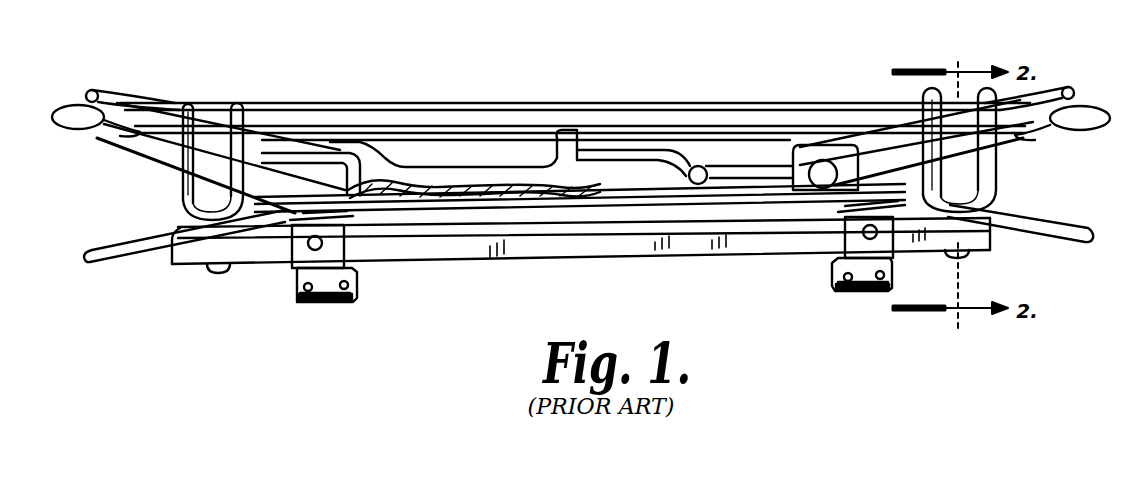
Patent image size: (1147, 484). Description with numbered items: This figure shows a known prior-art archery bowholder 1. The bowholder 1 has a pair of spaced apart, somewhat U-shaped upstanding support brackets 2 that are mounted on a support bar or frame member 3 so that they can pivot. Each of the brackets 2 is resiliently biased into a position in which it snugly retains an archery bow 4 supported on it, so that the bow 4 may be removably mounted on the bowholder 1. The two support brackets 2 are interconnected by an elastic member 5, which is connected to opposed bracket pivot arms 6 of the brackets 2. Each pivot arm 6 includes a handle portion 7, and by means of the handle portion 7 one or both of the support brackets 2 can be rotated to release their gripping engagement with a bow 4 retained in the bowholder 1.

The archery bowholder 1 is at (499, 270).
The support brackets 2 is at (189, 205).
The support bar or frame member 3 is at (599, 247).
The archery bow 4 is at (682, 142).
The elastic member 5 is at (710, 212).
The bracket pivot arms 6 is at (271, 206).
The handle portion 7 is at (88, 256).